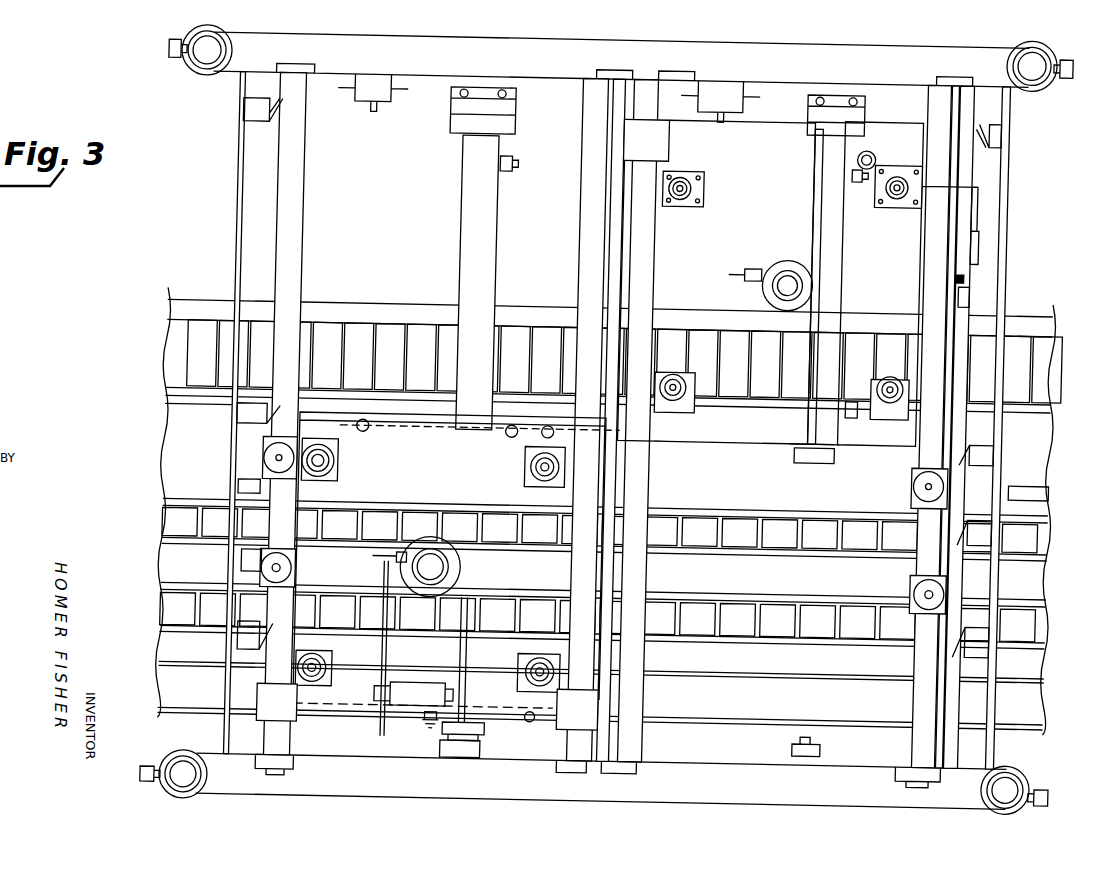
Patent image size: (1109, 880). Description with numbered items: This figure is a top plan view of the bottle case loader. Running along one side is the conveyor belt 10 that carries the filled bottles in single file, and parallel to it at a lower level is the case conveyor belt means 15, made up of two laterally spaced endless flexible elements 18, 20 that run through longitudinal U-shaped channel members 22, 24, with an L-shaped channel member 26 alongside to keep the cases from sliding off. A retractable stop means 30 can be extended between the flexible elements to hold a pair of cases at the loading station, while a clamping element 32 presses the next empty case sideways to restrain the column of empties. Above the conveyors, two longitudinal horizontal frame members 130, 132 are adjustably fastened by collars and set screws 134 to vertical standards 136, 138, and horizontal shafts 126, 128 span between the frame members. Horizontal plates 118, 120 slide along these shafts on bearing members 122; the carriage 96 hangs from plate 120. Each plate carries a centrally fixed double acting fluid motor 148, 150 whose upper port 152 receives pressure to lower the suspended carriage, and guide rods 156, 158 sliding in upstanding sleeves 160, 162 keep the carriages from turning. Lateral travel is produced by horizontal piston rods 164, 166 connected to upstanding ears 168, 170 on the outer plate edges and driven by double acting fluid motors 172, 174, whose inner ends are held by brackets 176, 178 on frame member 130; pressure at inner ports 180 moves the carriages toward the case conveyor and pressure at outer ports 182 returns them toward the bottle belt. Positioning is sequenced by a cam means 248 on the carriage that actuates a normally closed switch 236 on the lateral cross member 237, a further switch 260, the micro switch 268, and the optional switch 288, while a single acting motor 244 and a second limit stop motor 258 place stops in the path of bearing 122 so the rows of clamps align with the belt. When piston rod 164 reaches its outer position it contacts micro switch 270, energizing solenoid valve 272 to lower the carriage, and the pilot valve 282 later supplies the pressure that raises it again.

The conveyor belt 10 is at (1024, 327).
The second conveyor belt means 15 is at (168, 482).
The endless flexible element 18 is at (695, 548).
The endless flexible element 20 is at (746, 606).
The U-shaped channel member 22 is at (789, 652).
The U-shaped channel member 24 is at (811, 552).
The L-shaped channel member 26 is at (681, 723).
The retractable stop means 30 is at (242, 567).
The clamping element 32 is at (1030, 487).
The carriage 96 is at (962, 273).
The horizontal plate 118 is at (451, 473).
The horizontal plate 120 is at (794, 188).
The bearing member 122 is at (297, 729).
The horizontal shaft 126 is at (299, 193).
The horizontal shaft 128 is at (651, 485).
The horizontal frame member 130 is at (420, 64).
The horizontal frame member 132 is at (412, 788).
The collar and set screw 134 is at (178, 62).
The vertical standard 136 is at (183, 758).
The vertical standard 138 is at (200, 36).
The double acting fluid motor 148 is at (463, 577).
The double acting fluid motor 150 is at (760, 293).
The upper port 152 is at (762, 268).
The vertical guide rod 156 is at (338, 459).
The vertical guide rod 158 is at (700, 182).
The upstanding sleeve 160 is at (336, 467).
The upstanding sleeve 162 is at (686, 206).
The horizontal piston rod 164 is at (465, 560).
The horizontal piston rod 166 is at (823, 457).
The upstanding ear 168 is at (474, 724).
The upstanding ear 170 is at (802, 458).
The double acting fluid motor 172 is at (459, 242).
The double acting fluid motor 174 is at (810, 219).
The bracket 176 is at (448, 126).
The bracket 178 is at (802, 128).
The inner port 180 is at (508, 172).
The outer port 182 is at (443, 417).
The normally closed switch 236 is at (238, 422).
The lateral cross member 237 is at (232, 215).
The single acting motor 244 is at (291, 452).
The cam means 248 is at (241, 491).
The second limit stop motor 258 is at (292, 571).
The normally closed switch 260 is at (992, 529).
The micro switch 268 is at (243, 643).
The micro switch 270 is at (455, 761).
The solenoid valve 272 is at (427, 686).
The pilot valve 282 is at (978, 236).
The normally closed switch 288 is at (238, 120).